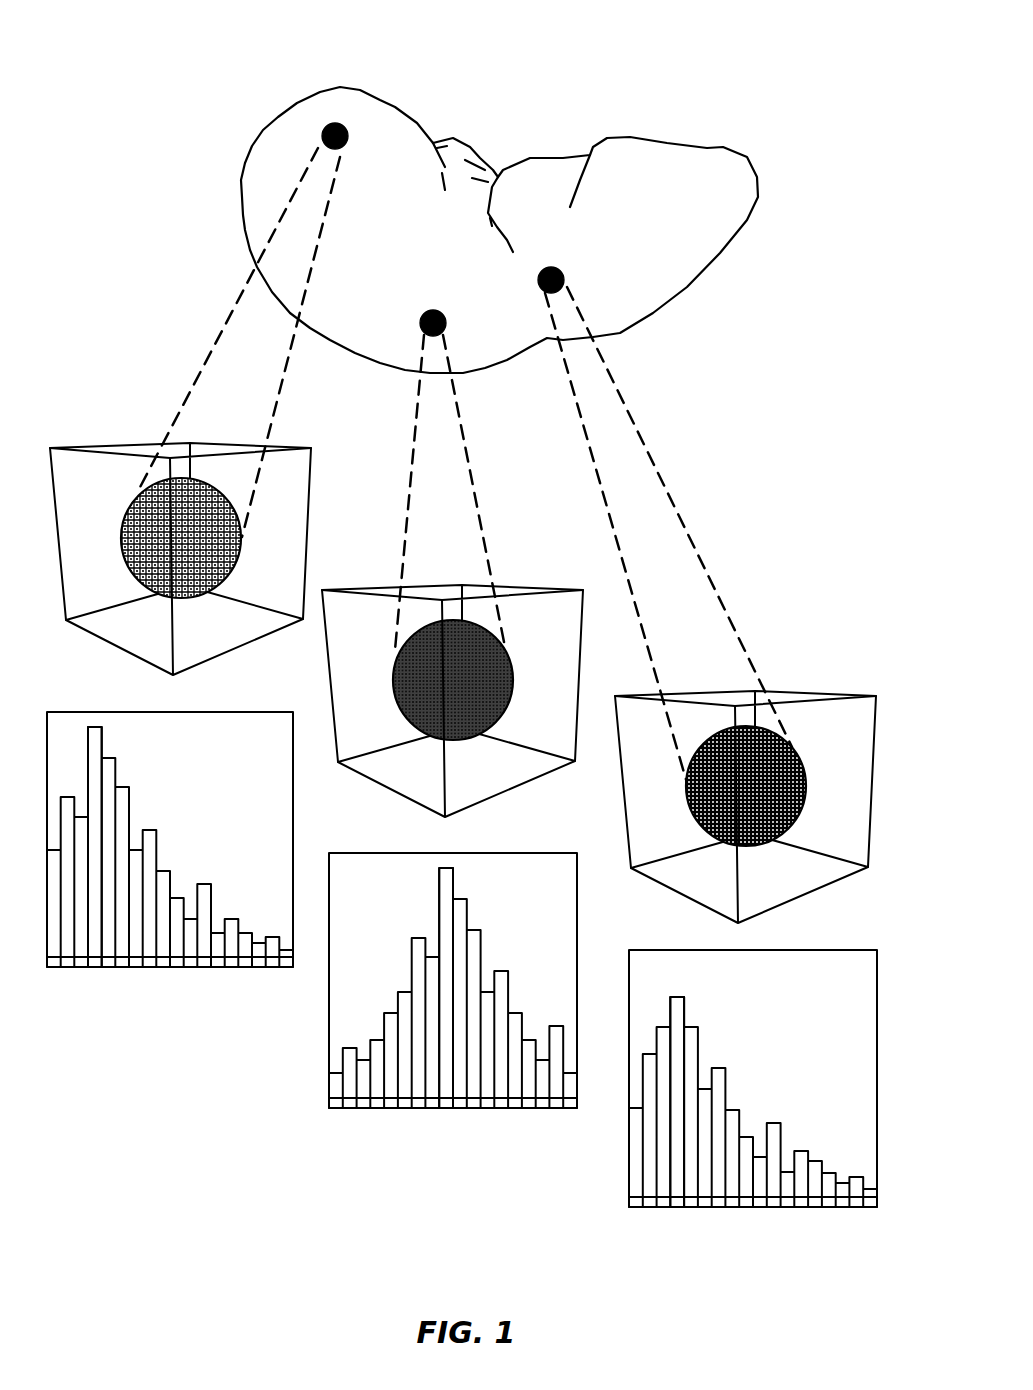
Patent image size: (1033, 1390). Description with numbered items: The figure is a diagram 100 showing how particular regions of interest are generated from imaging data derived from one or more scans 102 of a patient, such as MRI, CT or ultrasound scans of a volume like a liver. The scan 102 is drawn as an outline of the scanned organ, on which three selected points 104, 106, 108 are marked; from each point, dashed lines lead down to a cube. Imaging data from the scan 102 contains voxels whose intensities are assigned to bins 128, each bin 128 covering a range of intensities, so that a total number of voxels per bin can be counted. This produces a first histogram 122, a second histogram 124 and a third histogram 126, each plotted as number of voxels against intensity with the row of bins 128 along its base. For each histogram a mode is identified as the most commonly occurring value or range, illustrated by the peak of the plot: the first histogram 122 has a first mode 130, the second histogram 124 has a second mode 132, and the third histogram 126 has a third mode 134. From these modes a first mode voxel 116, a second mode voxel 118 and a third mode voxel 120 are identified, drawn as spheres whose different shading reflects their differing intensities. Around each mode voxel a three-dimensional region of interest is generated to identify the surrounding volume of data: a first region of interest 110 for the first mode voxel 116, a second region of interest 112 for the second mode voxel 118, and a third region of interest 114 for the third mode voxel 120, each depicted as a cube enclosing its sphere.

The diagram 100 is at (163, 66).
The scan 102 is at (643, 74).
The first seed point 104 is at (347, 133).
The second seed point 106 is at (555, 267).
The third seed point 108 is at (433, 310).
The first region of interest 110 is at (180, 528).
The second region of interest 112 is at (452, 670).
The third region of interest 114 is at (745, 776).
The first mode voxel 116 is at (212, 540).
The second mode voxel 118 is at (484, 683).
The third mode voxel 120 is at (778, 788).
The first histogram 122 is at (273, 755).
The second histogram 124 is at (557, 899).
The third histogram 126 is at (857, 995).
The bin 128 is at (57, 969).
The first mode 130 is at (103, 731).
The second mode 132 is at (437, 893).
The third mode 134 is at (686, 1003).